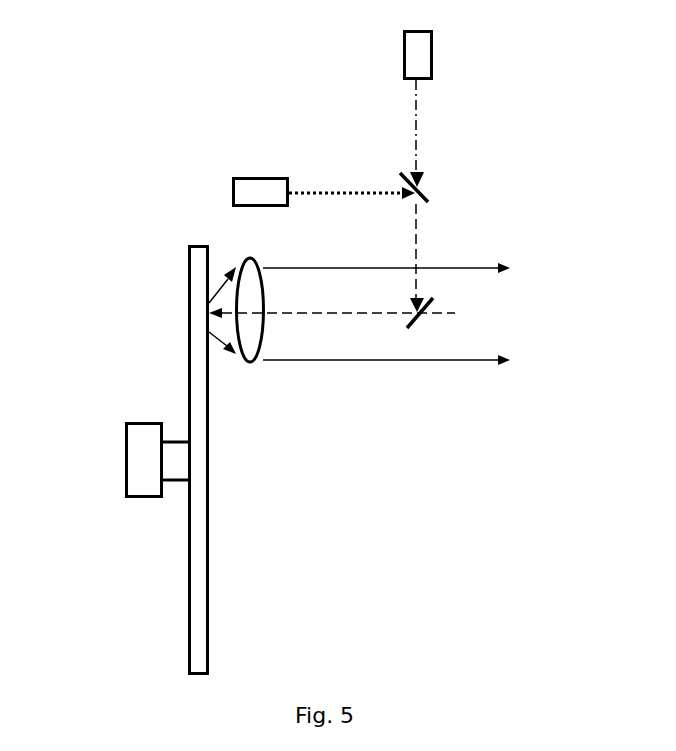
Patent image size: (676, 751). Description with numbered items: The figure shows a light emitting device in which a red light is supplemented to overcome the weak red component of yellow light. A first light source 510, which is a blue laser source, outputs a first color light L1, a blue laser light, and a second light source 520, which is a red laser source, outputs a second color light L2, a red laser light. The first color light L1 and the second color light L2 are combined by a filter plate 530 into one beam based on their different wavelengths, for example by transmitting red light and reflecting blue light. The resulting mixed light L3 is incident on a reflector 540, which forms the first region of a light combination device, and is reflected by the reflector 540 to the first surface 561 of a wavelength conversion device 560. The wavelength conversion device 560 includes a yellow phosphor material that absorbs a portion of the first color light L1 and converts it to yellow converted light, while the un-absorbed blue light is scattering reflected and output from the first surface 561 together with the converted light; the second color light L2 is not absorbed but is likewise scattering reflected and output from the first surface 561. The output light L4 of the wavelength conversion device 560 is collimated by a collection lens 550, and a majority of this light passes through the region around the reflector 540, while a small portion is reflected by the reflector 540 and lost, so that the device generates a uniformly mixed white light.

The first light source 510 is at (247, 193).
The second light source 520 is at (413, 57).
The filter plate 530 is at (418, 190).
The reflector 540 is at (425, 316).
The collection lens 550 is at (250, 363).
The wavelength conversion device 560 is at (200, 262).
The first surface 561 is at (207, 620).
The first color light L1 is at (341, 192).
The second color light L2 is at (417, 130).
The mixed light L3 is at (417, 242).
The output light L4 is at (425, 360).